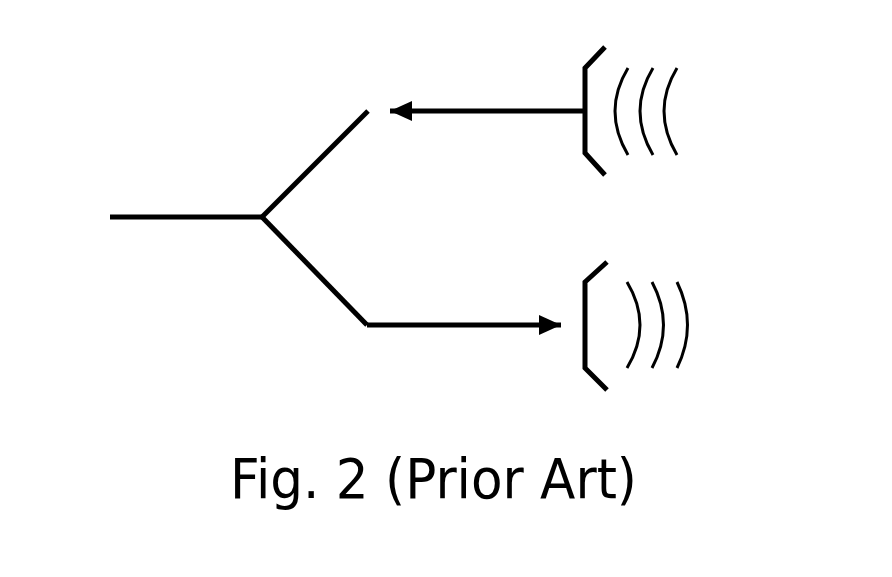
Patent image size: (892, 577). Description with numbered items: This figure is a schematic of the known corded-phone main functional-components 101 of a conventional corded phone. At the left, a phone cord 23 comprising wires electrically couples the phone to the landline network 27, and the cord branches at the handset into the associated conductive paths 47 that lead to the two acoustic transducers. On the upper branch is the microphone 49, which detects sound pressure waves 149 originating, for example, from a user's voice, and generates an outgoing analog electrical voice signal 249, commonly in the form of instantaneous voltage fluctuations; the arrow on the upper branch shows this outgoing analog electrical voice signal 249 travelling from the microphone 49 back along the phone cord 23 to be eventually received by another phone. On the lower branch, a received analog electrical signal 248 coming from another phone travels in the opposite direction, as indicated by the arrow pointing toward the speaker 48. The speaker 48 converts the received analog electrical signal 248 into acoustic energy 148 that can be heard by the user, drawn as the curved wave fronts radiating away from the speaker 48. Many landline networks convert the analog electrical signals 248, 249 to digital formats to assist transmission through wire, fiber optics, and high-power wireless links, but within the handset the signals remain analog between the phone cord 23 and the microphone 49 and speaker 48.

The corded-phone main functional-components 101 is at (202, 62).
The phone cord 23 is at (215, 217).
The landline network 27 is at (167, 233).
The conductive paths 47 is at (270, 297).
The outgoing analog electrical voice signal 249 is at (468, 110).
The received analog electrical signal 248 is at (475, 327).
The microphone 49 is at (597, 57).
The speaker 48 is at (595, 383).
The sound pressure waves 149 is at (665, 107).
The acoustic energy 148 is at (686, 300).